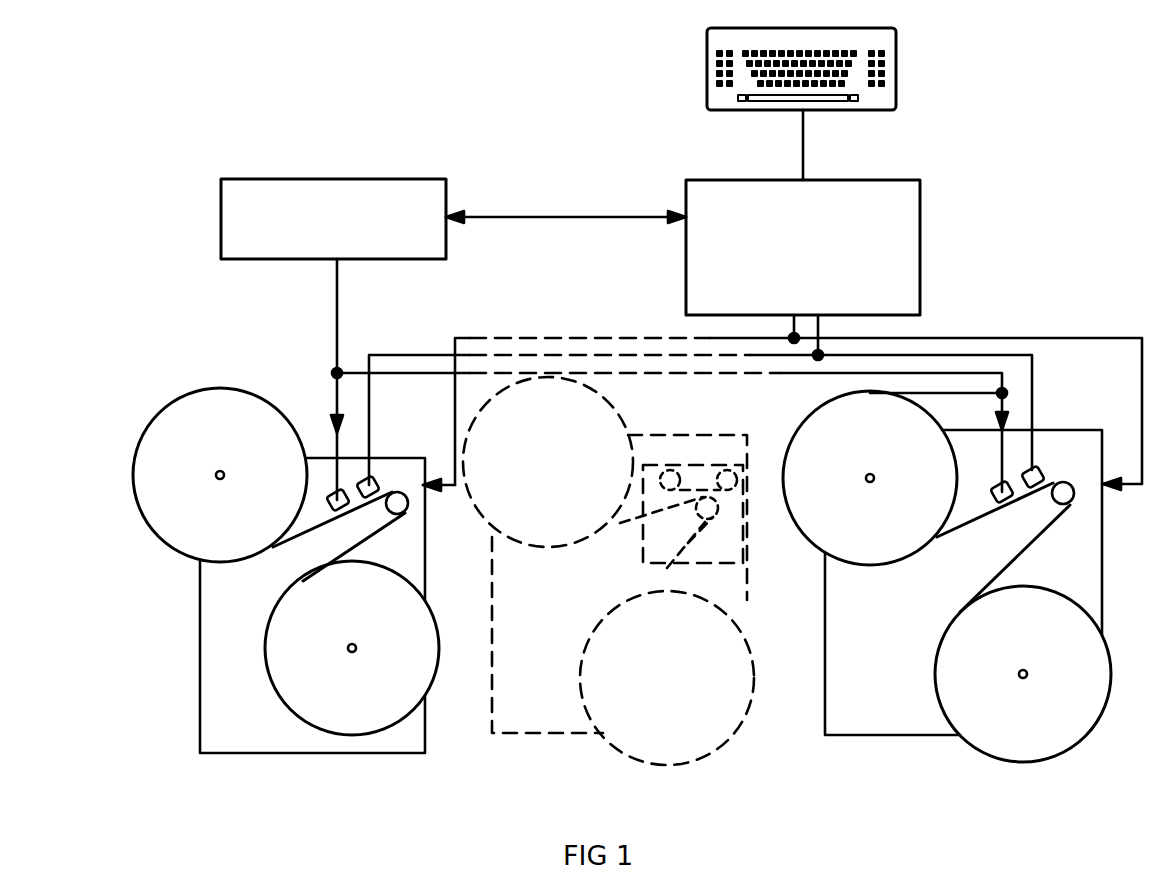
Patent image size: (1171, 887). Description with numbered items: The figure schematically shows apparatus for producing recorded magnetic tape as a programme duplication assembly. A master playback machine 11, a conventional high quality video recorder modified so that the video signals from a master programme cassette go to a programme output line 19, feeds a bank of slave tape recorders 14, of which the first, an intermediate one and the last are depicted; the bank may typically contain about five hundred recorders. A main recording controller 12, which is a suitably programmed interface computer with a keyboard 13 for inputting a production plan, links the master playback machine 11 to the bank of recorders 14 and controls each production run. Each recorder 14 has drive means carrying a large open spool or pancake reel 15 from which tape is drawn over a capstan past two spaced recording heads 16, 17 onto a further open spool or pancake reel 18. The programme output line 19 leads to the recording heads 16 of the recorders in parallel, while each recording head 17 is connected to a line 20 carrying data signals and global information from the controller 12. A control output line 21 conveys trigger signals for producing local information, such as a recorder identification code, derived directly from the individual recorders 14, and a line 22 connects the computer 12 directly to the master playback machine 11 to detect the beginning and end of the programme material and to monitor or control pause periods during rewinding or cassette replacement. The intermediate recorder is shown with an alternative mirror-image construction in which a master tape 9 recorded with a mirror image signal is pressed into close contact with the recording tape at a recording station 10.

The master tape 9 is at (738, 487).
The recording station 10 is at (715, 548).
The master playback machine 11 is at (323, 205).
The main recording controller 12 is at (720, 190).
The keyboard 13 is at (707, 63).
The slave tape recorder 14 is at (880, 698).
The open spool or pancake reel 15 is at (187, 413).
The recording head 16 is at (343, 511).
The recording head 17 is at (375, 480).
The further open spool or pancake reel 18 is at (353, 703).
The programme output line 19 is at (337, 306).
The signal control line 20 is at (390, 355).
The control output line 21 is at (470, 338).
The line 22 is at (520, 217).